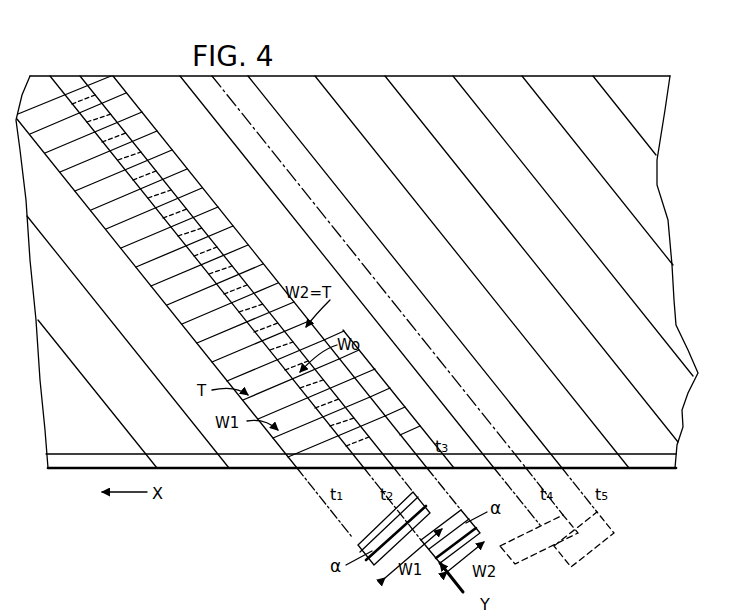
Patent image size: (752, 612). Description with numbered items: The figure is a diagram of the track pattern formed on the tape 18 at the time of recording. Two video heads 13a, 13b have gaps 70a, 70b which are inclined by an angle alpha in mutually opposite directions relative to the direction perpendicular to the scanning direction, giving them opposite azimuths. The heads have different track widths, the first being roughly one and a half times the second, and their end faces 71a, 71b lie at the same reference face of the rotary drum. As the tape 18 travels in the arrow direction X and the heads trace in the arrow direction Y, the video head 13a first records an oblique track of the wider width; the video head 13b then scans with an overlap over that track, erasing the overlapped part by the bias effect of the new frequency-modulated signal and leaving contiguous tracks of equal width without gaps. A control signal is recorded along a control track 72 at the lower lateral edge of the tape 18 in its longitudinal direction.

The tape 18 is at (85, 473).
The control track 72 is at (192, 470).
The gap 70a is at (352, 536).
The gap 70b is at (455, 522).
The video head 13a is at (362, 552).
The video head 13b is at (434, 553).
The end face 71a is at (370, 560).
The end face 71b is at (430, 553).